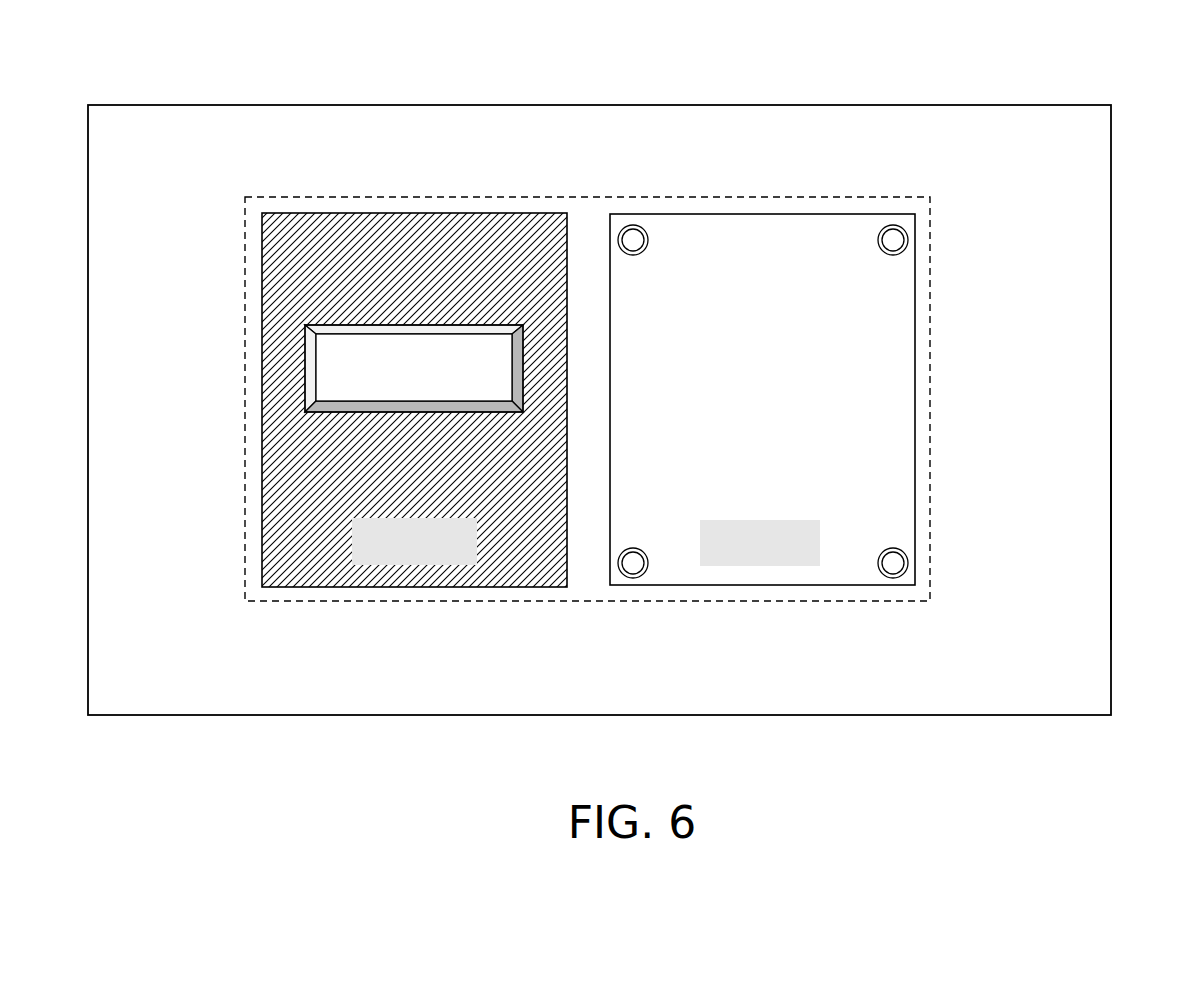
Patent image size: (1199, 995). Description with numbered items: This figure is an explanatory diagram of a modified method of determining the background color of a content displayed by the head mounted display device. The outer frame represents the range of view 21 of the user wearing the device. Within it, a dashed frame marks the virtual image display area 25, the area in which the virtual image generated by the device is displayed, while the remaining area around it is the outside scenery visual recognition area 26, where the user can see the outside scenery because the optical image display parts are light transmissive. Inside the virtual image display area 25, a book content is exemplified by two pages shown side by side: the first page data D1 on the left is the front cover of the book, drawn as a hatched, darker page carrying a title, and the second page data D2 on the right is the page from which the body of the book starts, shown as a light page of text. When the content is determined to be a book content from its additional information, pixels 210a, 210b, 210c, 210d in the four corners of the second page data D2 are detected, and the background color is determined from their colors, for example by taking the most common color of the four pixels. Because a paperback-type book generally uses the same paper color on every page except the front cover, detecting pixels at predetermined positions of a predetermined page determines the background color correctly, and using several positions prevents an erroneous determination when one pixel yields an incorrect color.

The range of view 21 is at (1044, 96).
The virtual image display area 25 is at (931, 240).
The outside scenery visual recognition area 26 is at (1111, 518).
The first page data D1 is at (410, 190).
The second page data D2 is at (762, 190).
The pixel 210a is at (628, 225).
The pixel 210b is at (888, 225).
The pixel 210c is at (637, 578).
The pixel 210d is at (897, 578).